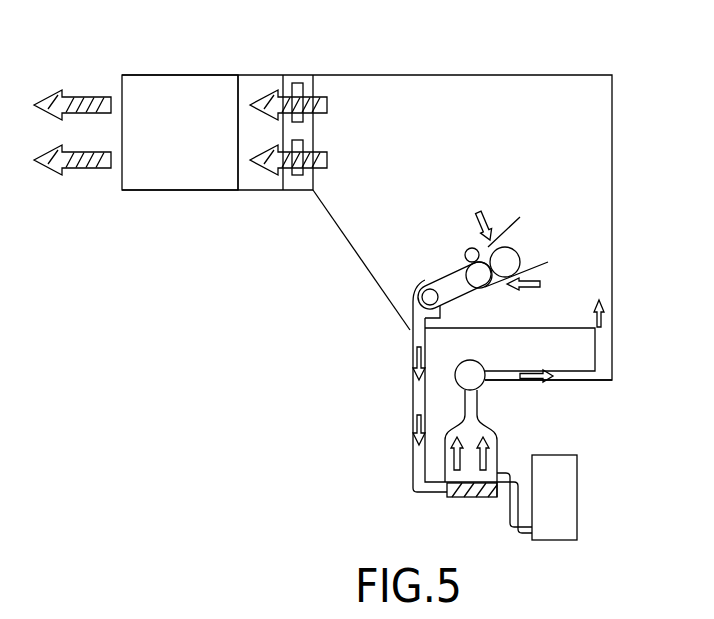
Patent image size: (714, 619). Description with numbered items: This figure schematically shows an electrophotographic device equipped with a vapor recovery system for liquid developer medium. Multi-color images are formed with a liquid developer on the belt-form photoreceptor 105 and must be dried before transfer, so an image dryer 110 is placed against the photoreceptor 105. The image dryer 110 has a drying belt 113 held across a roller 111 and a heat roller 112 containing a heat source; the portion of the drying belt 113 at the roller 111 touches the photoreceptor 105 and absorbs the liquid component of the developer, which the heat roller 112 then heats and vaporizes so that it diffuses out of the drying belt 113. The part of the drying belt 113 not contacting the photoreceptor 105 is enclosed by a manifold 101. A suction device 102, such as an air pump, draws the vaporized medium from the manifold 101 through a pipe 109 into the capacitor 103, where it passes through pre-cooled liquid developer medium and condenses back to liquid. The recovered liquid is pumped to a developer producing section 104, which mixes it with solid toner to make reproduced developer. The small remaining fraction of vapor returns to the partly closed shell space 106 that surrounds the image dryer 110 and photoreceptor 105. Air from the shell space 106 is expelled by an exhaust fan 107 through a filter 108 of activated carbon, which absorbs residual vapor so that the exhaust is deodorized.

The manifold 101 is at (440, 272).
The suction device 102 is at (455, 384).
The capacitor 103 is at (497, 437).
The developer producing section 104 is at (577, 512).
The photoreceptor 105 is at (548, 262).
The shell space 106 is at (343, 242).
The exhaust fan 107 is at (300, 82).
The filter 108 is at (156, 172).
The pipe 109 is at (412, 378).
The image dryer 110 is at (472, 248).
The roller 111 is at (480, 279).
The heat roller 112 is at (421, 302).
The drying belt 113 is at (460, 307).